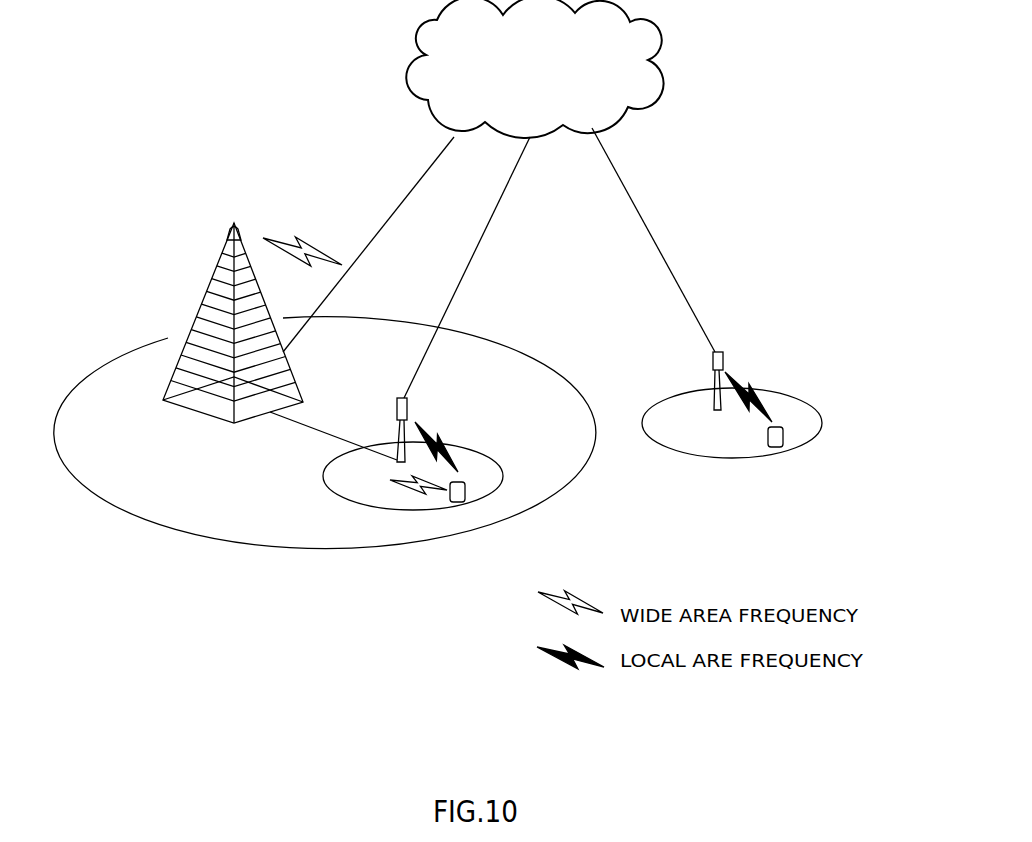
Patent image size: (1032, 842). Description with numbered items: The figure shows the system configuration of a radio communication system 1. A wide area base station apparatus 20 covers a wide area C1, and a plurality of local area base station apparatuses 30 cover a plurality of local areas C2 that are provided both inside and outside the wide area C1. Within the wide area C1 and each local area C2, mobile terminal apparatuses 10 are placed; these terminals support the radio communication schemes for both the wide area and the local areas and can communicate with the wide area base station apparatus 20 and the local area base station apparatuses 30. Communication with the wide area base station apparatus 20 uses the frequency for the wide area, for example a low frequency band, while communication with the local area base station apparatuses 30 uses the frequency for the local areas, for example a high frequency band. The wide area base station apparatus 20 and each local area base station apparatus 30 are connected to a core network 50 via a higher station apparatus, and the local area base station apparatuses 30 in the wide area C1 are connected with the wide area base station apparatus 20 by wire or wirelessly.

The radio communication system 1 is at (690, 255).
The mobile terminal apparatus 10 is at (465, 486).
The wide area base station apparatus 20 is at (247, 242).
The local area base station apparatus 30 is at (407, 403).
The core network 50 is at (661, 34).
The wide area C1 is at (515, 348).
The local area C2 is at (475, 448).